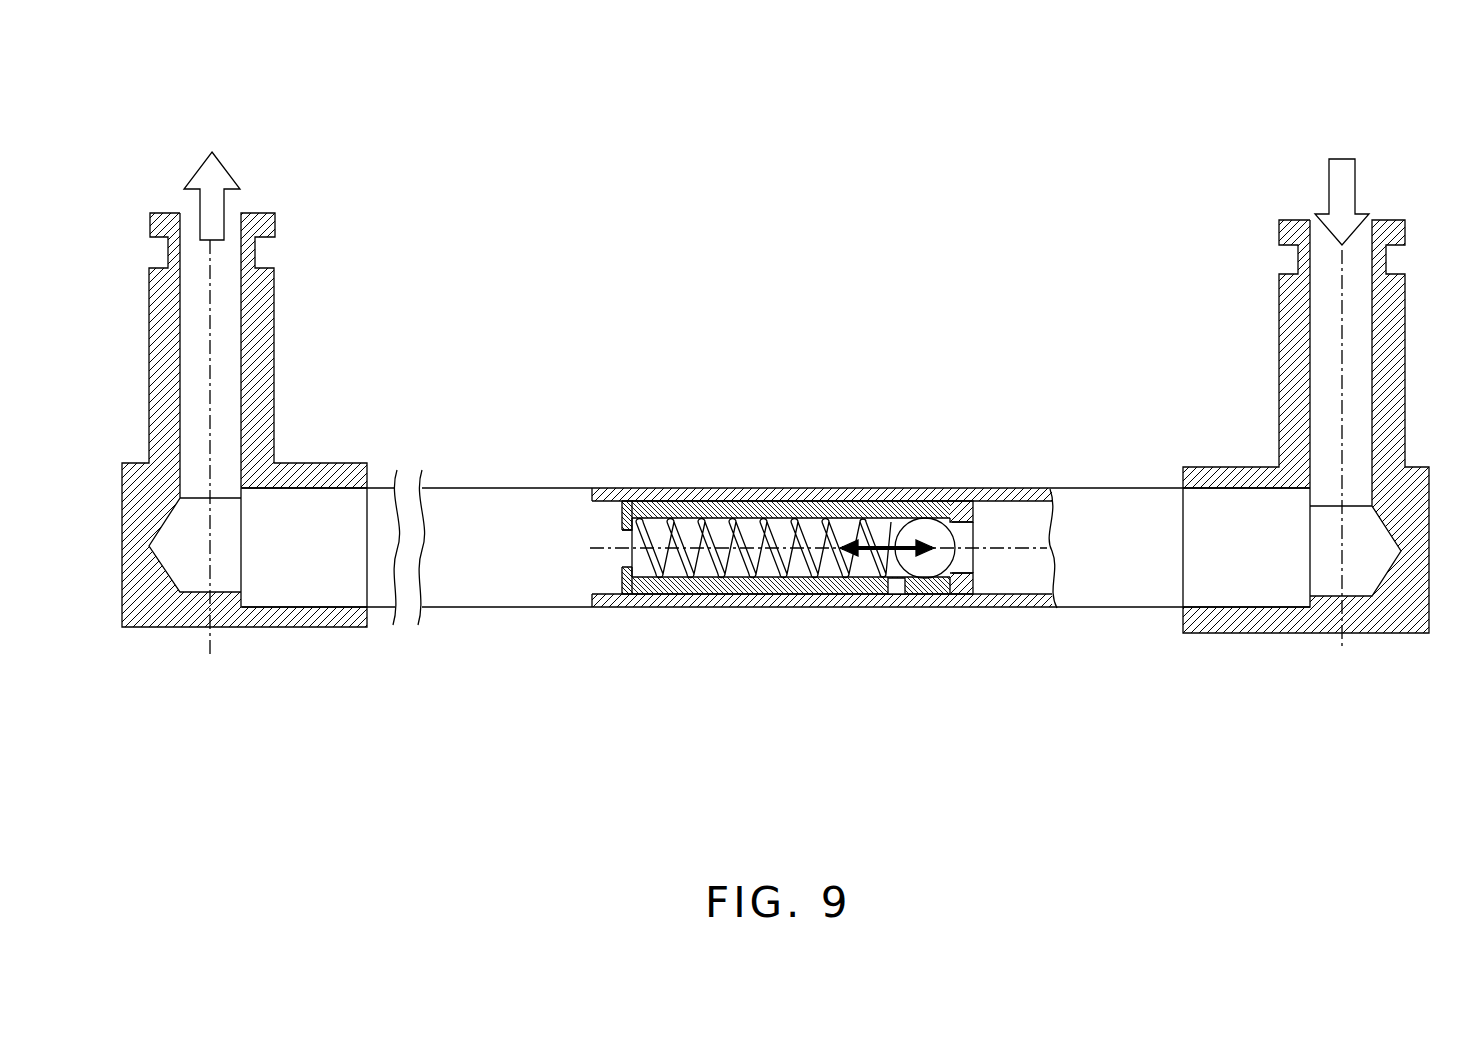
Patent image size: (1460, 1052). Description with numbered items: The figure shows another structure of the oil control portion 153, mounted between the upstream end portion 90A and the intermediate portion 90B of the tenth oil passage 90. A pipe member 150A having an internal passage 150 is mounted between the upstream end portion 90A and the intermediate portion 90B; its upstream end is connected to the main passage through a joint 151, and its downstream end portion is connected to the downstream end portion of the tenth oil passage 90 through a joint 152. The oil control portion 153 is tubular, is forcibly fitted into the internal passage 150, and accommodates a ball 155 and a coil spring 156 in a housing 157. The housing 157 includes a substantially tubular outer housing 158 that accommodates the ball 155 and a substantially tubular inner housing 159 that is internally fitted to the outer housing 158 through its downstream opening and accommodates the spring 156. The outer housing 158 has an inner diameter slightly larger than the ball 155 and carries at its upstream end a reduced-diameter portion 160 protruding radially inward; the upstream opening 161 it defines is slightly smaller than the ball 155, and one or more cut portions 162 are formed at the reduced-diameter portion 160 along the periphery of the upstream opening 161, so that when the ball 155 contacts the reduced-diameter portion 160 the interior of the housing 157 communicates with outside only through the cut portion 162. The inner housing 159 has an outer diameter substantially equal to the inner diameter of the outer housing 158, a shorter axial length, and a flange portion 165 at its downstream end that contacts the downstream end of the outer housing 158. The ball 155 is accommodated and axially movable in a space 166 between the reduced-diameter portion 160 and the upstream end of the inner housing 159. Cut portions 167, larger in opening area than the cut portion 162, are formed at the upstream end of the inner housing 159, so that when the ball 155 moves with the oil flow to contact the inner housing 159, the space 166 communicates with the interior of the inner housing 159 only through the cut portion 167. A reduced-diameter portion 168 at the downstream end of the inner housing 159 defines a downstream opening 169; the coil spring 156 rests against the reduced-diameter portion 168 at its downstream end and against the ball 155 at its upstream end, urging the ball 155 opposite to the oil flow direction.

The tenth oil passage 90 is at (484, 128).
The upstream end portion 90A is at (1268, 211).
The intermediate portion 90B is at (290, 208).
The internal passage 150 is at (1047, 517).
The pipe member 150A is at (1137, 488).
The joint 151 is at (1277, 303).
The joint 152 is at (275, 293).
The oil control portion 153 is at (727, 370).
The ball 155 is at (925, 518).
The coil spring 156 is at (706, 530).
The housing 157 is at (763, 463).
The outer housing 158 is at (806, 500).
The inner housing 159 is at (751, 514).
The reduced-diameter portion 160 is at (965, 513).
The upstream opening 161 is at (971, 560).
The cut portion 162 is at (976, 520).
The flange portion 165 is at (627, 500).
The space 166 is at (897, 584).
The cut portion 167 is at (851, 511).
The reduced-diameter portion 168 is at (614, 500).
The downstream opening 169 is at (620, 552).